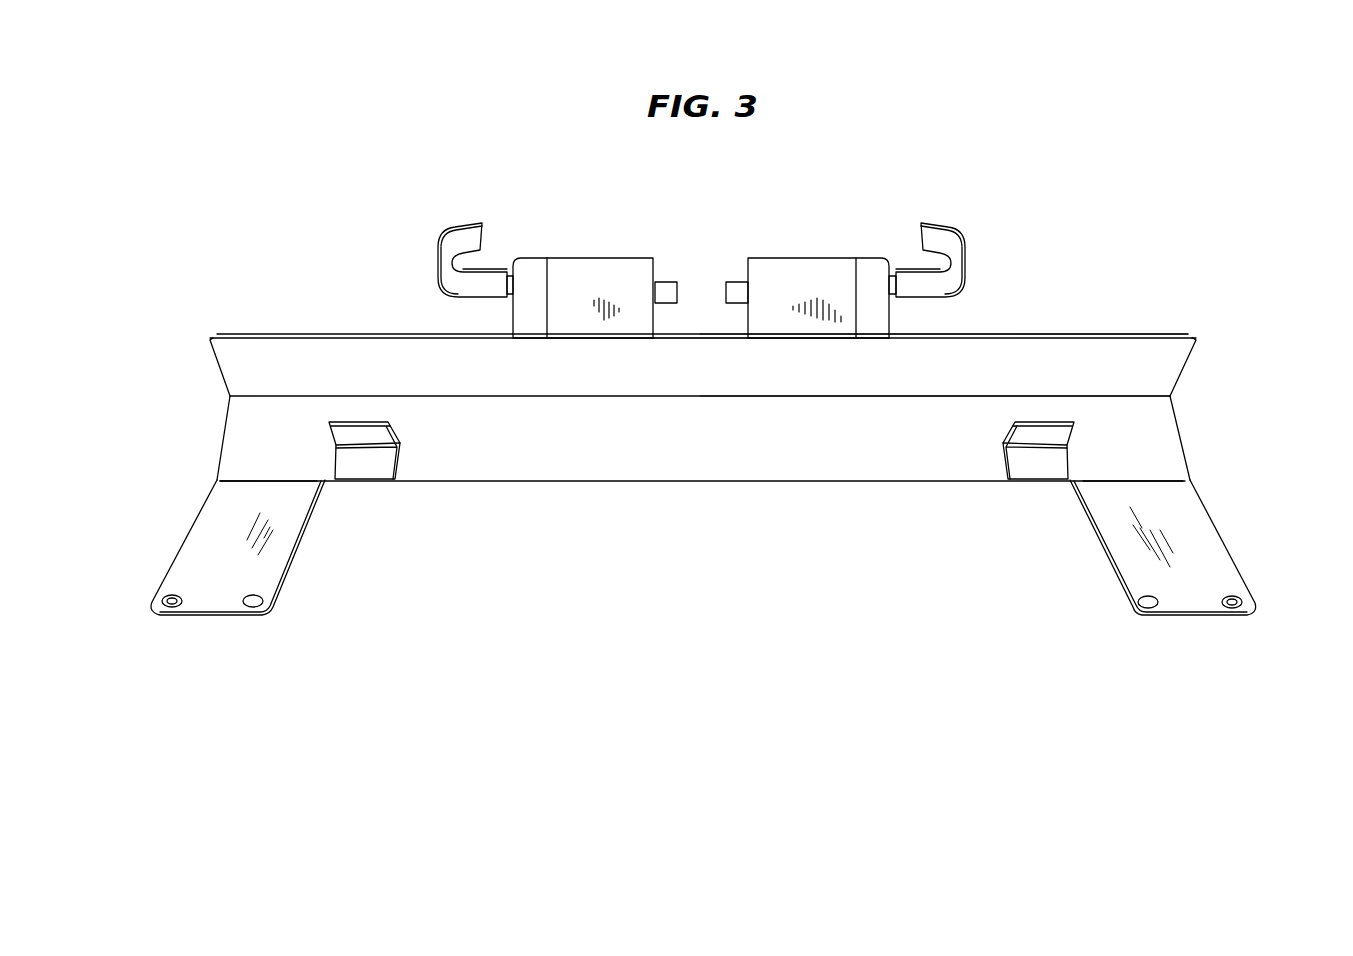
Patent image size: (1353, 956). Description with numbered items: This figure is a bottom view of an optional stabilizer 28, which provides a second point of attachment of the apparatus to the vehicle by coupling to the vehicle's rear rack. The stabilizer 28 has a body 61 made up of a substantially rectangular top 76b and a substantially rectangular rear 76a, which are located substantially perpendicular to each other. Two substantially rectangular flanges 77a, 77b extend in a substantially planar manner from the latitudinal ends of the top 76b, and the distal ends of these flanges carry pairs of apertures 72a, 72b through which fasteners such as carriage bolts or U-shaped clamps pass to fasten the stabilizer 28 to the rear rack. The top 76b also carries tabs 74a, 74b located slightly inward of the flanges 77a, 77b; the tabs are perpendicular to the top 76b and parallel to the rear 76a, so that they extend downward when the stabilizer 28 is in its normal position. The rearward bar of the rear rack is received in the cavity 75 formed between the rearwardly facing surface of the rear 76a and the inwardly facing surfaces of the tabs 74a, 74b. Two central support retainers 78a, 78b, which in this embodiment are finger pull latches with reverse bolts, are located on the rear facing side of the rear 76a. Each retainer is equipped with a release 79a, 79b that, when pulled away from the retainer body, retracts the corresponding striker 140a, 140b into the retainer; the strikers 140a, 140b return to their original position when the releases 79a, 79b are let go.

The stabilizer 28 is at (872, 153).
The body 61 is at (258, 312).
The aperture 72a is at (153, 610).
The aperture 72b is at (1243, 603).
The tab 74a is at (362, 438).
The tab 74b is at (1038, 437).
The cavity 75 is at (703, 313).
The rear 76a is at (1133, 355).
The top 76b is at (1148, 430).
The flange 77a is at (212, 538).
The flange 77b is at (1192, 533).
The central support retainer 78a is at (590, 272).
The central support retainer 78b is at (807, 272).
The release 79a is at (452, 242).
The release 79b is at (943, 242).
The striker 140a is at (668, 280).
The striker 140b is at (738, 280).